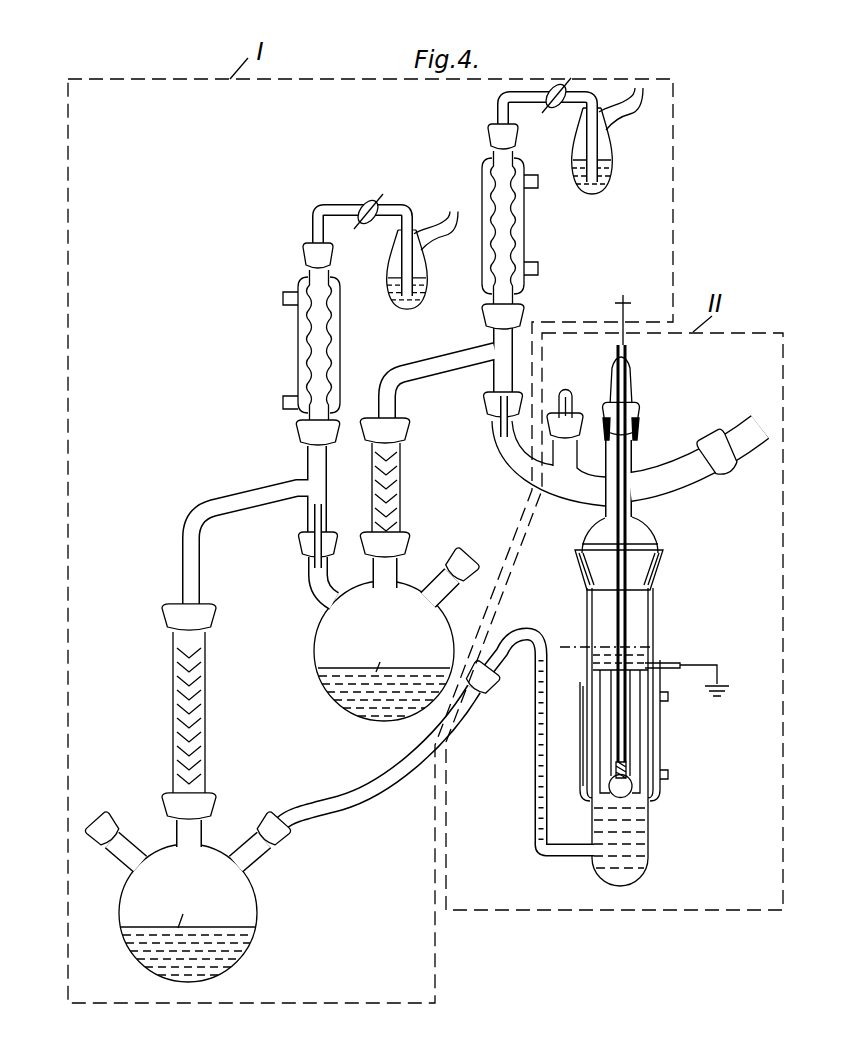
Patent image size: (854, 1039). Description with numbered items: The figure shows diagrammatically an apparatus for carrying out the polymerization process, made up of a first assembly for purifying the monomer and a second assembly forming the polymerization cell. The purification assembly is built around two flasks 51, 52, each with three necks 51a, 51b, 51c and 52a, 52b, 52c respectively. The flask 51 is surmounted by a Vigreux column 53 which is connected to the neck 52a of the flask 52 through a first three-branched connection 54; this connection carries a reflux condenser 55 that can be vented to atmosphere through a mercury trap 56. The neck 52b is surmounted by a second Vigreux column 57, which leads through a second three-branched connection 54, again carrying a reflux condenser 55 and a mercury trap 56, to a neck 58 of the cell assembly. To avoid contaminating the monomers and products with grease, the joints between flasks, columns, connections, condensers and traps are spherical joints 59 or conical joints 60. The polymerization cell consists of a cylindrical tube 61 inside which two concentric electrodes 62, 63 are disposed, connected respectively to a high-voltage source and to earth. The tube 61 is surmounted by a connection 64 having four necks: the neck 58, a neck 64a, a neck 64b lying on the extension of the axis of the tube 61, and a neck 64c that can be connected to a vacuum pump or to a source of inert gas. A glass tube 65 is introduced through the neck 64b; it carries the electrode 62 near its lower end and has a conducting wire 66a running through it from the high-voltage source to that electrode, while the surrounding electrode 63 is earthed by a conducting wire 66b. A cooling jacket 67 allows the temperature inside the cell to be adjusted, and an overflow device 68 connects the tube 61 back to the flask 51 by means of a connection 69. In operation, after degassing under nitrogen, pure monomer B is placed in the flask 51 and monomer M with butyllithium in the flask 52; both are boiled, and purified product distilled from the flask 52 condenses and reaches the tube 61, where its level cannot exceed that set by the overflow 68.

The flask 51 is at (252, 923).
The neck 51a is at (122, 863).
The neck 51b is at (205, 831).
The neck 51c is at (255, 863).
The flask 52 is at (314, 662).
The neck 52a is at (306, 575).
The neck 52b is at (399, 563).
The neck 52c is at (449, 590).
The Vigreux column 53 is at (175, 699).
The three-branched connection 54 is at (283, 497).
The reflux condenser 55 is at (298, 336).
The mercury trap 56 is at (612, 152).
The Vigreux column 57 is at (401, 486).
The neck 58 is at (491, 449).
The spherical joint 59 is at (488, 138).
The conical joint 60 is at (633, 415).
The cylindrical tube 61 is at (654, 600).
The electrode 62 is at (630, 736).
The electrode 63 is at (646, 719).
The connection 64 is at (636, 514).
The neck 64a is at (577, 471).
The neck 64b is at (636, 454).
The neck 64c is at (688, 494).
The glass tube 65 is at (603, 545).
The conducting wire 66a is at (624, 641).
The conducting wire 66b is at (718, 673).
The cooling jacket 67 is at (579, 708).
The overflow device 68 is at (534, 762).
The connection 69 is at (346, 784).